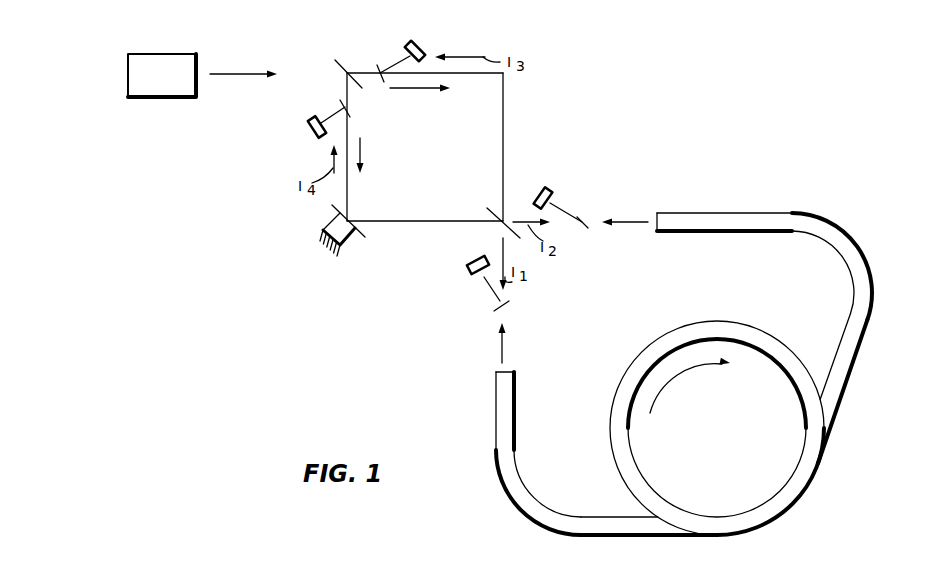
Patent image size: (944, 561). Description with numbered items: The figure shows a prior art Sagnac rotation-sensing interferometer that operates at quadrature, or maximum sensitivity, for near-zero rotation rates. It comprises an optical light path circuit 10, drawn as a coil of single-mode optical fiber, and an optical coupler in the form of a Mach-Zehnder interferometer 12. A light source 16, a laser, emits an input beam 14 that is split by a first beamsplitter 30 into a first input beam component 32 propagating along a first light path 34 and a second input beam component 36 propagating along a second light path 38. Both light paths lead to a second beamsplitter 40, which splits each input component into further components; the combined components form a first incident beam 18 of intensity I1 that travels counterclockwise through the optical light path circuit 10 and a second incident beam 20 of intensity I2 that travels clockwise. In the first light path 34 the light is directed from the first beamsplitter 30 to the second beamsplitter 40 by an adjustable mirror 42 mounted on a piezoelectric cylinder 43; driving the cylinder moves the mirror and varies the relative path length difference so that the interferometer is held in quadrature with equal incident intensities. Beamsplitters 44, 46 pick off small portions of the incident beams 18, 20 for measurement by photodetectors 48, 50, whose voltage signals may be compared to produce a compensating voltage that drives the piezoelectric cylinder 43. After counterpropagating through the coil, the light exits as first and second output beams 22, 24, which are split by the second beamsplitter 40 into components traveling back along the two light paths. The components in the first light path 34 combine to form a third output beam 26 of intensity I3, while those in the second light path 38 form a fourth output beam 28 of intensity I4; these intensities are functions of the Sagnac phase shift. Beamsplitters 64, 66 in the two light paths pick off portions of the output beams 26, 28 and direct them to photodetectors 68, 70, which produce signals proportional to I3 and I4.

The optical light path circuit 10 is at (814, 478).
The Mach-Zehnder interferometer 12 is at (608, 60).
The input beam 14 is at (226, 73).
The light source 16 is at (127, 73).
The first incident beam 18 is at (504, 248).
The second incident beam 20 is at (548, 225).
The first output beam 22 is at (504, 352).
The second output beam 24 is at (634, 221).
The third output beam 26 is at (472, 57).
The fourth output beam 28 is at (332, 158).
The first beamsplitter 30 is at (339, 68).
The first input beam component 32 is at (416, 89).
The first light path 34 is at (503, 136).
The second input beam component 36 is at (360, 153).
The second light path 38 is at (348, 195).
The second beamsplitter 40 is at (490, 207).
The adjustable mirror 42 is at (356, 230).
The piezoelectric cylinder 43 is at (331, 212).
The beamsplitter 44 is at (496, 304).
The beamsplitter 46 is at (586, 222).
The photodetector 48 is at (482, 257).
The photodetector 50 is at (541, 189).
The beamsplitter 64 is at (378, 70).
The beamsplitter 66 is at (347, 106).
The photodetector 68 is at (412, 41).
The photodetector 70 is at (308, 129).